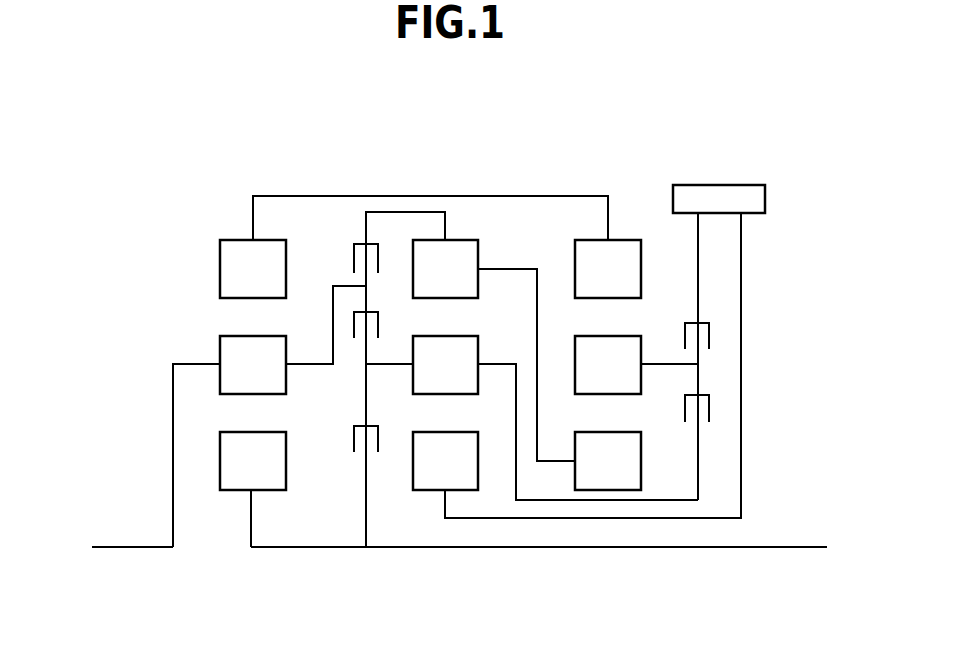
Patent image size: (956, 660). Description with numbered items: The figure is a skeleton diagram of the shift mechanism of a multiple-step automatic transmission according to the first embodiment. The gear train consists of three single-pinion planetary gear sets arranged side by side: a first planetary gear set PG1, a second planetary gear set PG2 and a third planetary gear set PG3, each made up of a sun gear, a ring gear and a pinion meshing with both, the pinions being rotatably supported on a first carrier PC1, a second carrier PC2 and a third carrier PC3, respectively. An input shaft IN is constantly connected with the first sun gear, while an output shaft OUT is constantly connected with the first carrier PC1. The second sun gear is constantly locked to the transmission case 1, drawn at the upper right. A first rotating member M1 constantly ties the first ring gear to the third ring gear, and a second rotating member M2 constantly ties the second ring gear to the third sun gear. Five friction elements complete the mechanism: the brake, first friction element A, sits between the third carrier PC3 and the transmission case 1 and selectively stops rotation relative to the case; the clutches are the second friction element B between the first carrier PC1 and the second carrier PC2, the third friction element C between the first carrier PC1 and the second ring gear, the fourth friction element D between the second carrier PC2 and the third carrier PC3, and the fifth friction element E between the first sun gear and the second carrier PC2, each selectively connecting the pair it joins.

The transmission case 1 is at (767, 197).
The first rotating member M1 is at (253, 220).
The second rotating member M2 is at (507, 268).
The third friction element C is at (354, 258).
The second friction element B is at (378, 320).
The fifth friction element E is at (353, 433).
The first friction element A is at (711, 333).
The fourth friction element D is at (709, 400).
The first carrier PC1 is at (190, 363).
The second carrier PC2 is at (505, 363).
The third carrier PC3 is at (662, 363).
The first planetary gear set PG1 is at (235, 512).
The second planetary gear set PG2 is at (425, 512).
The third planetary gear set PG3 is at (648, 482).
The output shaft OUT is at (117, 548).
The input shaft IN is at (793, 548).